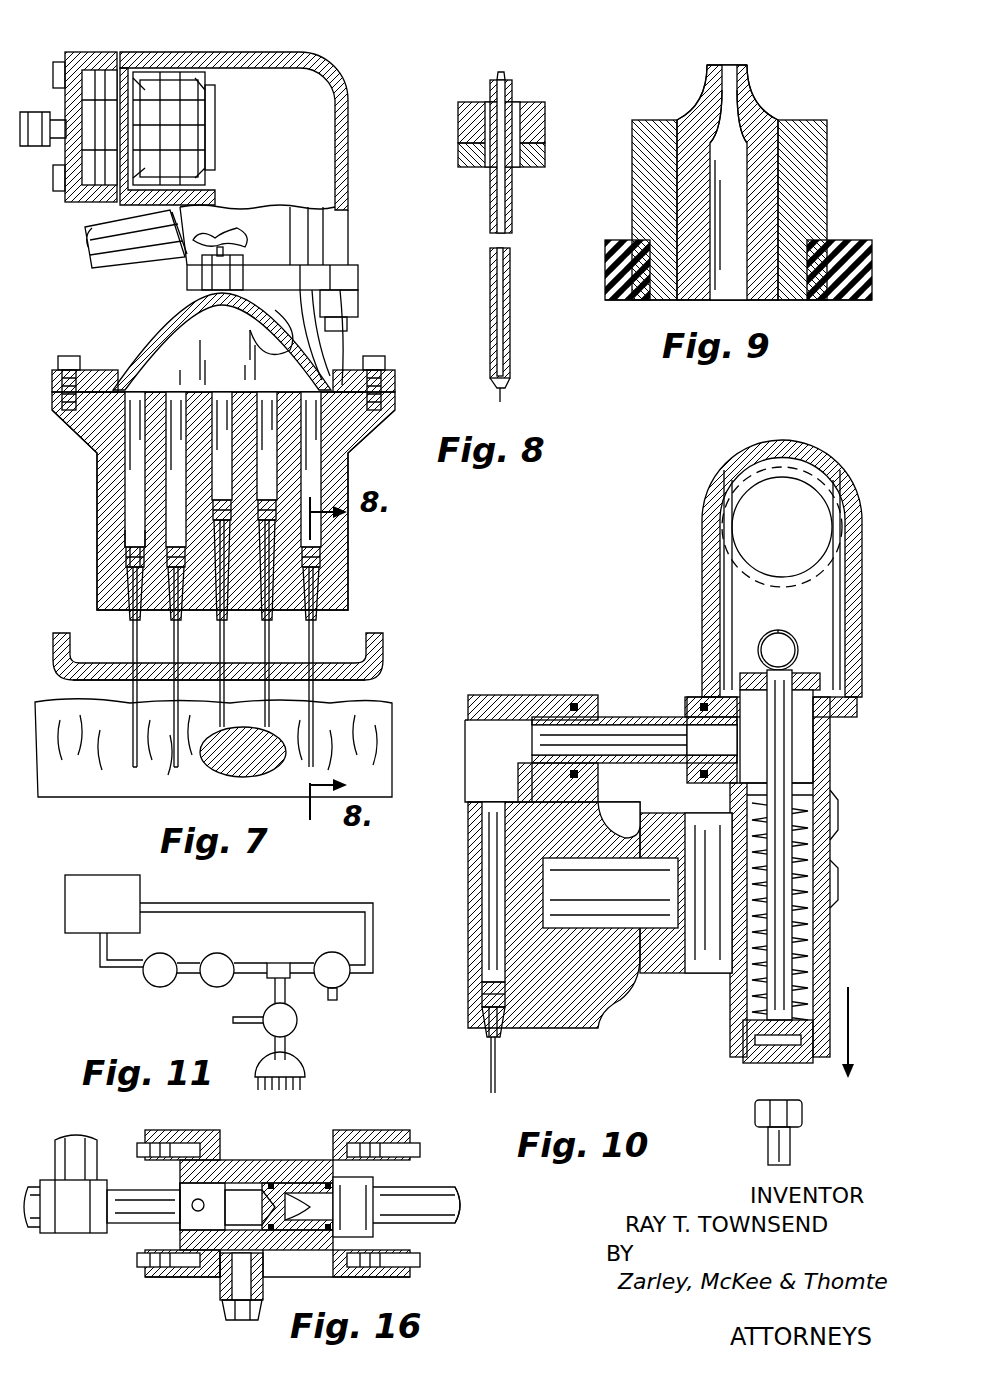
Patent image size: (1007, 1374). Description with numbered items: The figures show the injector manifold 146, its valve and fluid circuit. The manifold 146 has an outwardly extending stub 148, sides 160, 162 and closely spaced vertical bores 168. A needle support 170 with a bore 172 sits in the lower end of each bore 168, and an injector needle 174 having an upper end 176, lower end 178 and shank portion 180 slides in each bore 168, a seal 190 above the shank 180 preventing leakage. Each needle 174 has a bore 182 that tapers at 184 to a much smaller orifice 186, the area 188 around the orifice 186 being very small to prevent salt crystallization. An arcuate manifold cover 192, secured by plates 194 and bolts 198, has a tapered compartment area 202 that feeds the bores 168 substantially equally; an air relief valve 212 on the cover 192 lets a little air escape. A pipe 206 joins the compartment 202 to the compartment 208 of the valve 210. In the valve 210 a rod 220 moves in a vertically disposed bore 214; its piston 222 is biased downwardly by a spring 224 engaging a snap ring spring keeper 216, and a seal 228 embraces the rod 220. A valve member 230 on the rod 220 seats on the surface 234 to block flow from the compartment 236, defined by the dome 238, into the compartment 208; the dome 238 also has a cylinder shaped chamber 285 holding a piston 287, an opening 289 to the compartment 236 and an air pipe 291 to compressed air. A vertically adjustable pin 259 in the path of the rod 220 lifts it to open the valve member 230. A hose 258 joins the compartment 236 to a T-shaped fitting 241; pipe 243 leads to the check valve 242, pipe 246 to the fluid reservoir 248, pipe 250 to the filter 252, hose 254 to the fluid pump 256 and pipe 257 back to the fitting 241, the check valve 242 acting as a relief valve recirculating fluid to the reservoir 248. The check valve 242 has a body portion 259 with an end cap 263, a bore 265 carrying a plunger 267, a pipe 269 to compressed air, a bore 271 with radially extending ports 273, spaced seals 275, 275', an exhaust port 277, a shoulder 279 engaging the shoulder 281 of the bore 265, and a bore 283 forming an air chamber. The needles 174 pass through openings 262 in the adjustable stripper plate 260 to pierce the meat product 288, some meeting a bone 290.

In FIG. 7, the injector manifold 146 is at (92, 490).
In FIG. 11, the injector manifold 146 is at (305, 1072).
In FIG. 10, the outwardly extending stub 148 is at (612, 905).
In FIG. 7, the side 160 is at (350, 546).
In FIG. 7, the side 162 is at (125, 533).
In FIG. 7, the vertical bore 168 is at (175, 436).
In FIG. 10, the vertical bore 168 is at (487, 874).
In FIG. 7, the needle support 170 is at (130, 612).
In FIG. 10, the needle support 170 is at (500, 1035).
In FIG. 7, the bore 172 is at (318, 577).
In FIG. 10, the bore 172 is at (505, 1020).
In FIG. 7, the injector needle 174 is at (318, 638).
In FIG. 8, the injector needle 174 is at (484, 295).
In FIG. 9, the injector needle 174 is at (808, 115).
In FIG. 10, the injector needle 174 is at (486, 1077).
In FIG. 8, the upper end 176 is at (507, 74).
In FIG. 9, the upper end 176 is at (760, 90).
In FIG. 7, the lower end 178 is at (128, 800).
In FIG. 8, the lower end 178 is at (497, 392).
In FIG. 7, the shank portion 180 is at (130, 572).
In FIG. 8, the shank portion 180 is at (548, 152).
In FIG. 8, the bore 182 is at (504, 200).
In FIG. 9, the bore 182 is at (720, 195).
In FIG. 9, the taper 184 is at (712, 120).
In FIG. 9, the orifice 186 is at (730, 66).
In FIG. 9, the area around orifice 188 is at (715, 64).
In FIG. 7, the seal 190 is at (125, 556).
In FIG. 8, the seal 190 is at (545, 120).
In FIG. 9, the seal 190 is at (620, 268).
In FIG. 10, the seal 190 is at (487, 992).
In FIG. 10, the arcuate manifold cover 192 is at (512, 695).
In FIG. 7, the plate 194 is at (378, 390).
In FIG. 7, the bolt 198 is at (388, 372).
In FIG. 7, the tapered compartment area 202 is at (228, 367).
In FIG. 10, the tapered compartment area 202 is at (480, 748).
In FIG. 7, the pipe 206 is at (270, 358).
In FIG. 10, the pipe 206 is at (655, 718).
In FIG. 10, the compartment 208 is at (805, 745).
In FIG. 10, the valve 210 is at (840, 785).
In FIG. 11, the valve 210 is at (297, 1030).
In FIG. 7, the air relief valve 212 is at (215, 272).
In FIG. 10, the vertically disposed bore 214 is at (808, 942).
In FIG. 10, the snap ring spring keeper 216 is at (823, 800).
In FIG. 10, the rod 220 is at (784, 975).
In FIG. 10, the piston 222 is at (805, 1062).
In FIG. 10, the spring 224 is at (805, 882).
In FIG. 10, the seal 228 is at (815, 780).
In FIG. 10, the valve member 230 is at (800, 650).
In FIG. 10, the surface 234 is at (820, 696).
In FIG. 7, the compartment 236 is at (292, 159).
In FIG. 10, the compartment 236 is at (740, 605).
In FIG. 7, the dome 238 is at (348, 118).
In FIG. 10, the dome 238 is at (862, 568).
In FIG. 11, the T-shaped fitting 241 is at (278, 963).
In FIG. 16, the T-shaped fitting 241 is at (85, 1233).
In FIG. 11, the check valve 242 is at (350, 960).
In FIG. 16, the check valve 242 is at (190, 1293).
In FIG. 11, the pipe 243 is at (302, 963).
In FIG. 16, the pipe 243 is at (120, 1223).
In FIG. 11, the pipe 246 is at (348, 903).
In FIG. 16, the pipe 246 is at (230, 1300).
In FIG. 11, the fluid reservoir 248 is at (140, 888).
In FIG. 11, the pipe 250 is at (100, 945).
In FIG. 11, the filter 252 is at (145, 975).
In FIG. 11, the hose 254 is at (186, 960).
In FIG. 11, the fluid pump 256 is at (217, 988).
In FIG. 11, the pipe 257 is at (248, 963).
In FIG. 16, the pipe 257 is at (33, 1185).
In FIG. 7, the hose 258 is at (92, 262).
In FIG. 10, the hose 258 is at (800, 638).
In FIG. 11, the hose 258 is at (287, 993).
In FIG. 16, the hose 258 is at (82, 1138).
In FIG. 10, the vertically adjustable pin 259 is at (802, 1138).
In FIG. 16, the vertically adjustable pin 259 is at (300, 1258).
In FIG. 7, the adjustable stripper plate 260 is at (385, 640).
In FIG. 7, the opening 262 is at (270, 680).
In FIG. 16, the end cap 263 is at (400, 1280).
In FIG. 16, the bore 265 is at (425, 1190).
In FIG. 16, the plunger 267 is at (287, 1170).
In FIG. 11, the pipe 269 is at (338, 996).
In FIG. 16, the pipe 269 is at (465, 1200).
In FIG. 16, the bore 271 is at (237, 1198).
In FIG. 16, the radially extending port 273 is at (200, 1200).
In FIG. 16, the seal 275 is at (290, 1163).
In FIG. 16, the seal 275' is at (367, 1164).
In FIG. 16, the exhaust port 277 is at (310, 1162).
In FIG. 16, the shoulder 279 is at (300, 1242).
In FIG. 16, the shoulder 281 is at (320, 1216).
In FIG. 16, the bore 283 is at (380, 1228).
In FIG. 7, the cylinder shaped chamber 285 is at (215, 68).
In FIG. 7, the piston 287 is at (148, 95).
In FIG. 7, the meat product 288 is at (72, 770).
In FIG. 7, the opening 289 is at (213, 125).
In FIG. 10, the opening 289 is at (808, 487).
In FIG. 7, the bone 290 is at (243, 755).
In FIG. 7, the air pipe 291 is at (35, 108).
In FIG. 11, the air pipe 291 is at (250, 1025).